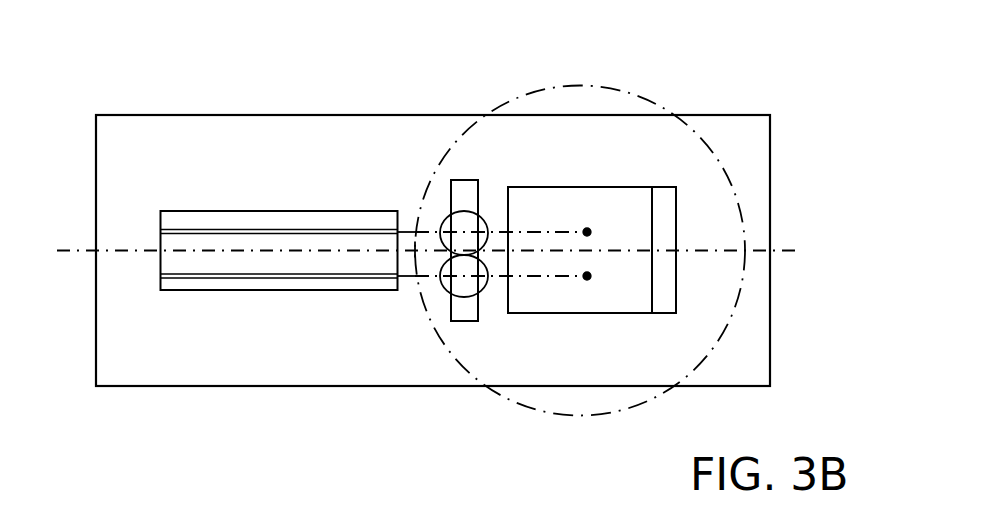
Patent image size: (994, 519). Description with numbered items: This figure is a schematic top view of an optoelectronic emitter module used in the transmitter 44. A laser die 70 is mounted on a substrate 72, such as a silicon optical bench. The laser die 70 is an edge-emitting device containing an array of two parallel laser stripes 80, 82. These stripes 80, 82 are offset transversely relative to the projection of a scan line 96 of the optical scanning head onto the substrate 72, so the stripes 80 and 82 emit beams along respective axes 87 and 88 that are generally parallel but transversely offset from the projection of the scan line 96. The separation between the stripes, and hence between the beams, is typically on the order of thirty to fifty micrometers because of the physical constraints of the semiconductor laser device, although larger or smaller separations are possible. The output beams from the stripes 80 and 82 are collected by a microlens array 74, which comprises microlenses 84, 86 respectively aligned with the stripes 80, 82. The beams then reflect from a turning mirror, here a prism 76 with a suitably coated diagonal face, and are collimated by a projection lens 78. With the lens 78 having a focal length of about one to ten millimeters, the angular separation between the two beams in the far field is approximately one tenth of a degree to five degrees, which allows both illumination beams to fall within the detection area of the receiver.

The transmitter 44 is at (130, 48).
The substrate 72 is at (96, 173).
The scan line 96 is at (68, 253).
The laser die 70 is at (172, 211).
The laser stripe 80 is at (279, 230).
The laser stripe 82 is at (285, 278).
The microlens array 74 is at (468, 180).
The microlens 84 is at (443, 223).
The microlens 86 is at (442, 287).
The prism 76 is at (577, 187).
The axis 87 is at (538, 232).
The axis 88 is at (542, 277).
The projection lens 78 is at (568, 86).